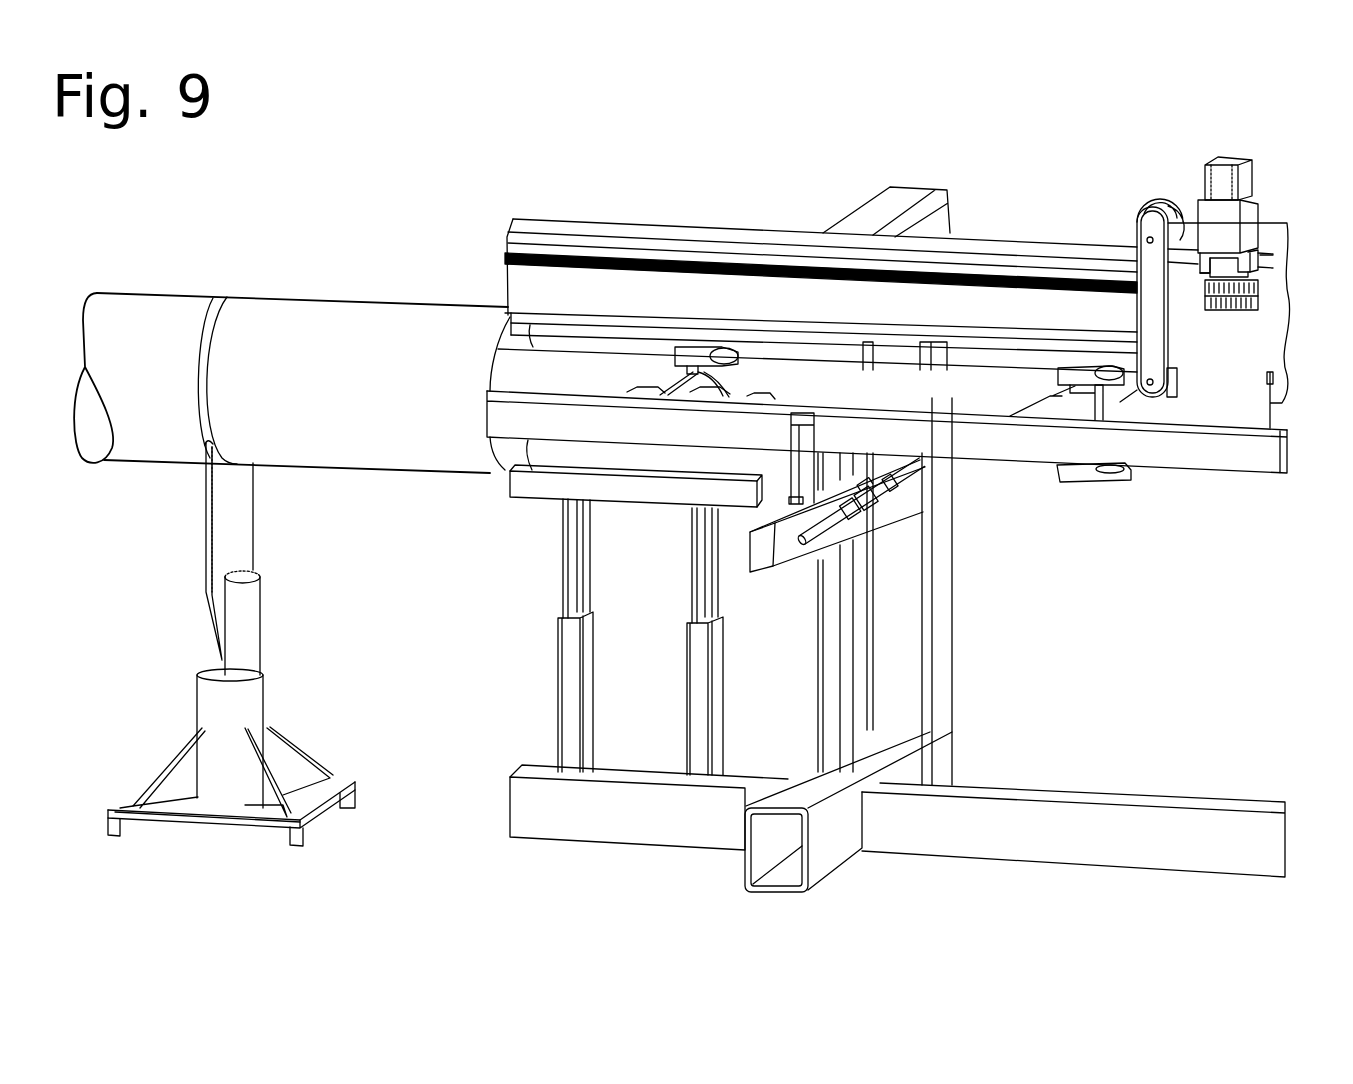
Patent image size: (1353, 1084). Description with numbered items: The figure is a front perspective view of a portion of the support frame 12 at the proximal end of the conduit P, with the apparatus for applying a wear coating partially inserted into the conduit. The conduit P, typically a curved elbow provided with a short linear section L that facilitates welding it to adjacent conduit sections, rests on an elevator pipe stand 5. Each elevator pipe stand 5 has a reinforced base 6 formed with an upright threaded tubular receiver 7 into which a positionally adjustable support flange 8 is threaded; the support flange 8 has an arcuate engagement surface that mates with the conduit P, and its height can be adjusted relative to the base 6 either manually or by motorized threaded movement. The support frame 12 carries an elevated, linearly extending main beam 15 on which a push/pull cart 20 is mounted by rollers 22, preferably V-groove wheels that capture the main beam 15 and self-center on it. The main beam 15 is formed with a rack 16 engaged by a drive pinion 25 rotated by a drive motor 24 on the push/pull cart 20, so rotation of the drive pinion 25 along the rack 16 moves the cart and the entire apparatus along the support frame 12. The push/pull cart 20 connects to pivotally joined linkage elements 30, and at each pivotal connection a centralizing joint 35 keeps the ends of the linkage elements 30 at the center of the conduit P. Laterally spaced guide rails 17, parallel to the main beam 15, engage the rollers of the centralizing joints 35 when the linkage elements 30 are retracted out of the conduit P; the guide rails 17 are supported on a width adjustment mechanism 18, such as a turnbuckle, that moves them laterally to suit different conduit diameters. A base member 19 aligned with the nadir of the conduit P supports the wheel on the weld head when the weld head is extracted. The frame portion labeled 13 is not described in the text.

The elevator pipe stand 5 is at (253, 680).
The reinforced base 6 is at (185, 772).
The threaded tubular receiver 7 is at (248, 710).
The support flange 8 is at (218, 555).
The support frame 12 is at (615, 158).
The frame 13 is at (950, 770).
The main beam 15 is at (580, 220).
The rack 16 is at (556, 264).
The guide rail 17 is at (1130, 455).
The width adjustment mechanism 18 is at (875, 497).
The base member 19 is at (538, 490).
The push/pull cart 20 is at (1247, 395).
The roller 22 is at (1160, 205).
The drive motor 24 is at (1231, 156).
The drive pinion 25 is at (1225, 312).
The linkage element 30 is at (951, 400).
The centralizing joint 35 is at (713, 314).
The conduit P is at (135, 300).
The short linear section L is at (322, 305).